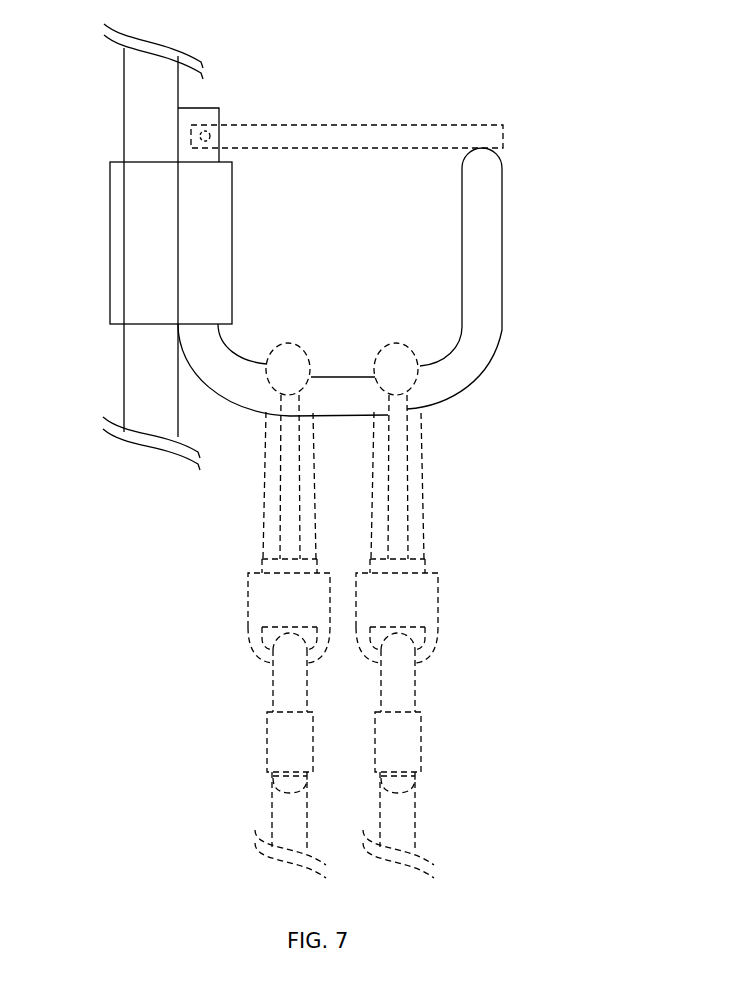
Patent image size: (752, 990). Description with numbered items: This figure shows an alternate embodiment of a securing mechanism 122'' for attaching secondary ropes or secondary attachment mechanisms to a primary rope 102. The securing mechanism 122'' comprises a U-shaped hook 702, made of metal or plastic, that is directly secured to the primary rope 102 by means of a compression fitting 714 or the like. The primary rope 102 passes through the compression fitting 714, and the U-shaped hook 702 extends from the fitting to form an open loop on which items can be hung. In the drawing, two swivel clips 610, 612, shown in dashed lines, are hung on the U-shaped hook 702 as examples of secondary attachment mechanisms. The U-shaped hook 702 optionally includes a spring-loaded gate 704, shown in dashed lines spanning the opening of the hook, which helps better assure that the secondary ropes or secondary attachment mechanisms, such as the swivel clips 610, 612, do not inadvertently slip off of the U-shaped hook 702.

The primary rope 102 is at (135, 108).
The compression fitting 714 is at (123, 243).
The spring-loaded gate 704 is at (385, 130).
The U-shaped hook 702 is at (493, 321).
The securing mechanism 122'' is at (395, 282).
The swivel clip 610 is at (233, 553).
The swivel clip 612 is at (459, 553).